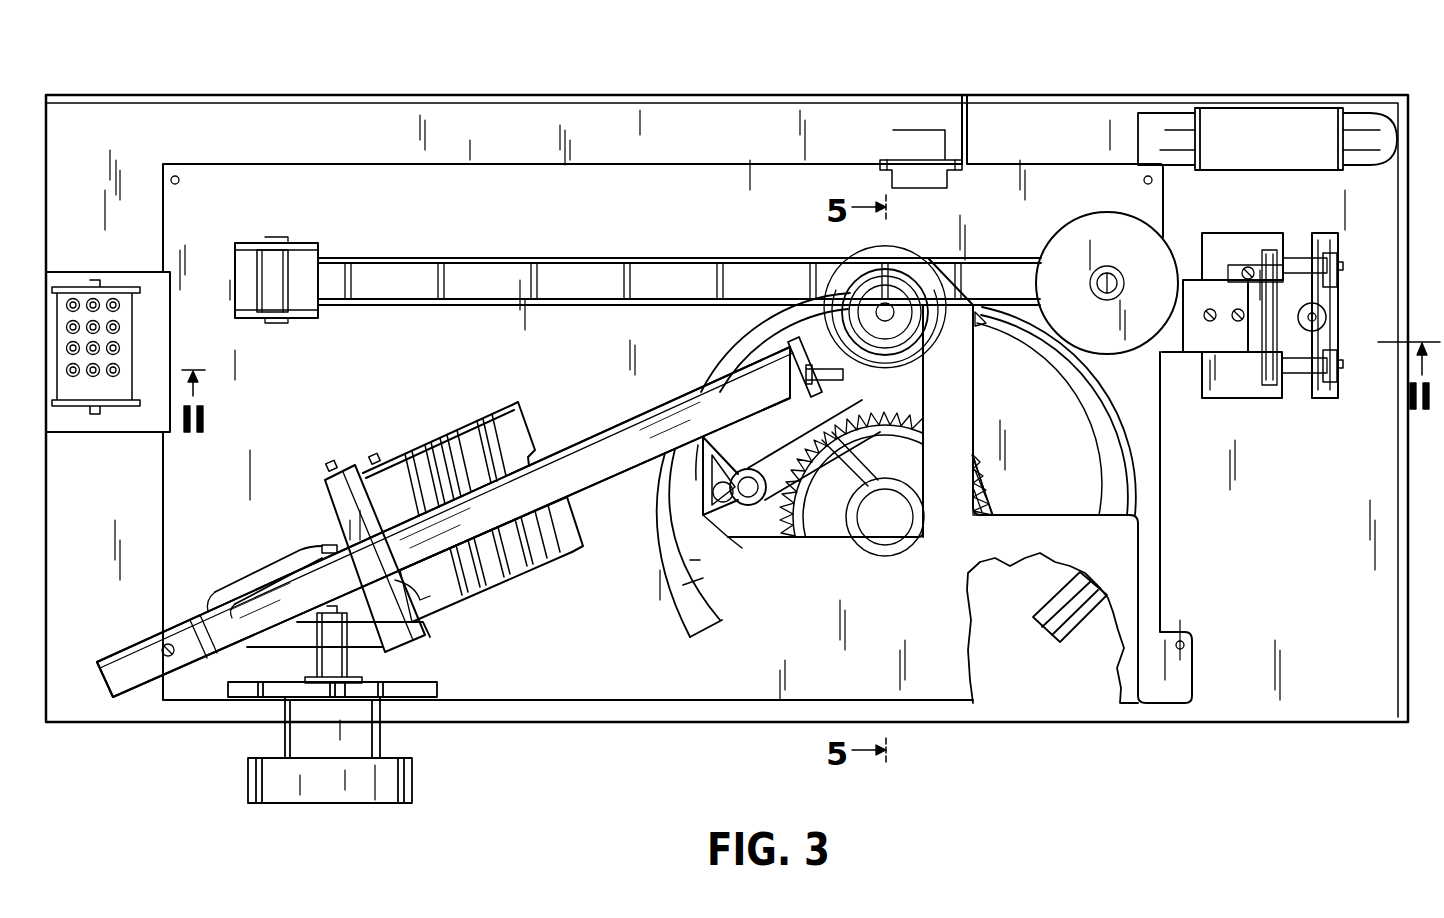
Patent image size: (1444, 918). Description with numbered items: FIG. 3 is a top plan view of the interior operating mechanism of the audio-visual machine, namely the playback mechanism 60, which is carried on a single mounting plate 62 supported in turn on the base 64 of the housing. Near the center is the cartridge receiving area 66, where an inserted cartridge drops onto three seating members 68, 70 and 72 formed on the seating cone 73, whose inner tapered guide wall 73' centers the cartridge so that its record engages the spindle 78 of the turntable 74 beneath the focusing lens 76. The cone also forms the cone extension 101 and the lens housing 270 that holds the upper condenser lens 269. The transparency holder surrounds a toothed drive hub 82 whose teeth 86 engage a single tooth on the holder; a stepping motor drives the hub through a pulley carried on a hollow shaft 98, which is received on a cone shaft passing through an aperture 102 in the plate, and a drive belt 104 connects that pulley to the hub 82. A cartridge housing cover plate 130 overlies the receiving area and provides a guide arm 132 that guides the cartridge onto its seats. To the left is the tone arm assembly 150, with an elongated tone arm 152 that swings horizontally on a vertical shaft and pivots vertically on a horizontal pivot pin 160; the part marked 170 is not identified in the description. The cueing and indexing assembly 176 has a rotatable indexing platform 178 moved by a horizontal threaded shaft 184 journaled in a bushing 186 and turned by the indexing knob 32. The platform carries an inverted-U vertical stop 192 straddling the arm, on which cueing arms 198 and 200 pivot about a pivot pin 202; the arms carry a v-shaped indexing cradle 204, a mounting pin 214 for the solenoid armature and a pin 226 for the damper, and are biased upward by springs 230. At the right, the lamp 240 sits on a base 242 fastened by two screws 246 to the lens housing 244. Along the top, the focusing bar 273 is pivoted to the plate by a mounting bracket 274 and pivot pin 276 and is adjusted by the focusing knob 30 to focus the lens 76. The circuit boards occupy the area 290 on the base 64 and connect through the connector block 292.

The focusing knob 30 is at (1150, 250).
The indexing knob 32 is at (410, 778).
The playback mechanism 60 is at (1182, 522).
The mounting plate 62 is at (1150, 520).
The base 64 is at (1322, 722).
The cartridge receiving area 66 is at (1075, 483).
The seating member 68 is at (667, 582).
The seating member 70 is at (982, 328).
The seating member 72 is at (1047, 616).
The seating cone 73 is at (1061, 411).
The inner tapered guide wall 73' is at (661, 612).
The turntable 74 is at (822, 523).
The focusing lens 76 is at (814, 368).
The spindle 78 is at (885, 528).
The toothed drive hub 82 is at (992, 496).
The teeth 86 is at (981, 478).
The hollow shaft 98 is at (718, 492).
The cone extension 101 is at (742, 538).
The aperture 102 is at (756, 470).
The drive belt 104 is at (772, 462).
The cartridge housing cover plate 130 is at (953, 690).
The guide arm 132 is at (965, 390).
The tone arm assembly 150 is at (268, 500).
The tone arm 152 is at (584, 480).
The horizontal pivot pin 160 is at (236, 590).
The arm extension 170 is at (110, 686).
The cueing assembly 176 is at (492, 598).
The indexing platform 178 is at (372, 640).
The horizontal threaded shaft 184 is at (322, 548).
The bushing 186 is at (437, 690).
The vertical stop 192 is at (326, 481).
The cueing arm 198 is at (397, 454).
The cueing arm 200 is at (552, 570).
The pivot pin 202 is at (328, 462).
The v-shaped indexing cradle 204 is at (525, 442).
The mounting pin 214 is at (372, 456).
The pin 226 is at (453, 438).
The springs 230 is at (422, 568).
The lamp 240 is at (1325, 314).
The base 242 is at (1330, 347).
The lens housing 244 is at (1238, 240).
The screws 246 is at (1342, 264).
The upper condenser lens 269 is at (897, 363).
The lens housing 270 is at (862, 368).
The focusing bar 273 is at (692, 258).
The mounting bracket 274 is at (310, 243).
The pivot pin 276 is at (283, 243).
The area 290 is at (678, 143).
The connector block 292 is at (108, 290).